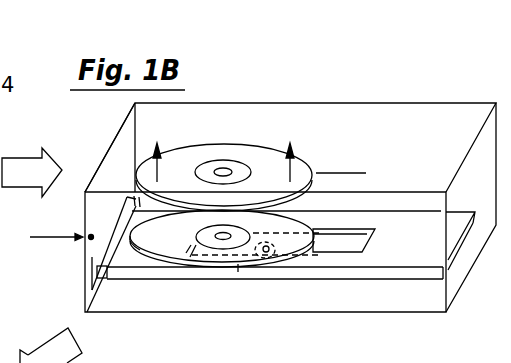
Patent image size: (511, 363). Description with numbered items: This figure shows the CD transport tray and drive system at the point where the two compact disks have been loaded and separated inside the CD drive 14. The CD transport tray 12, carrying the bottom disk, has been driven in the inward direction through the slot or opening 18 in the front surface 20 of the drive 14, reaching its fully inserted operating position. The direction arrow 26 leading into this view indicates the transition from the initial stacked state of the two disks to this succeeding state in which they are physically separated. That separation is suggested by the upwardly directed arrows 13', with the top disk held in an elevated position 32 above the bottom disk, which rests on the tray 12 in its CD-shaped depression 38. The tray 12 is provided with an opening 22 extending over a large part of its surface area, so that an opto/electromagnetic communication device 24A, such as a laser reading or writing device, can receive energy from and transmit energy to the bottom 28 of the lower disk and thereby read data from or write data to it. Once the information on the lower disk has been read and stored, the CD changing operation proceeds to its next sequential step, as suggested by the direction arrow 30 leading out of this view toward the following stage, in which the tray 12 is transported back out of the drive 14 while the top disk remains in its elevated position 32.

The CD drive 14 is at (462, 106).
The front surface 20 is at (115, 139).
The CD transport tray 12 is at (378, 274).
The slot or opening 18 is at (113, 218).
The upwardly directed arrows 13' is at (274, 147).
The elevated position 32 is at (357, 172).
The CD-shaped depression 38 is at (133, 250).
The opto/electromagnetic communication device 24A is at (279, 262).
The bottom of CD(B) 28 is at (238, 268).
The opening 22 is at (363, 229).
The direction arrow 26 is at (15, 188).
The direction arrow 30 is at (54, 357).